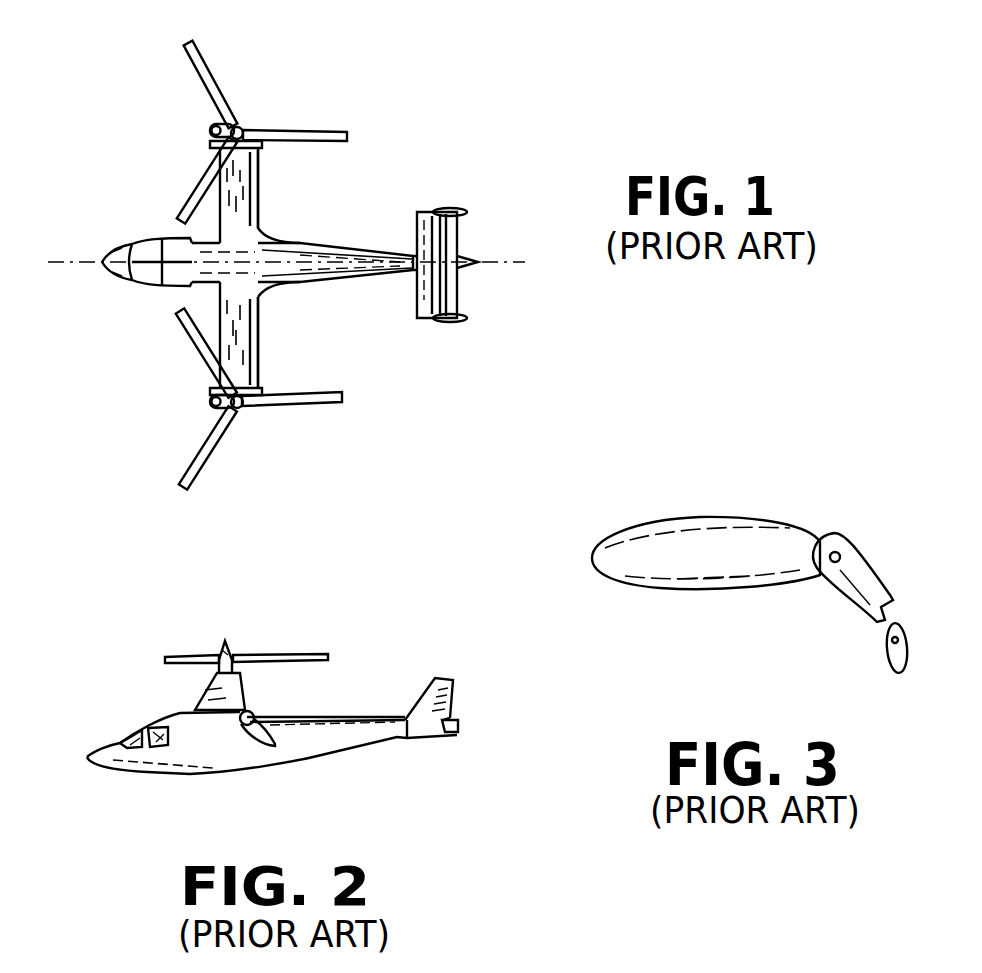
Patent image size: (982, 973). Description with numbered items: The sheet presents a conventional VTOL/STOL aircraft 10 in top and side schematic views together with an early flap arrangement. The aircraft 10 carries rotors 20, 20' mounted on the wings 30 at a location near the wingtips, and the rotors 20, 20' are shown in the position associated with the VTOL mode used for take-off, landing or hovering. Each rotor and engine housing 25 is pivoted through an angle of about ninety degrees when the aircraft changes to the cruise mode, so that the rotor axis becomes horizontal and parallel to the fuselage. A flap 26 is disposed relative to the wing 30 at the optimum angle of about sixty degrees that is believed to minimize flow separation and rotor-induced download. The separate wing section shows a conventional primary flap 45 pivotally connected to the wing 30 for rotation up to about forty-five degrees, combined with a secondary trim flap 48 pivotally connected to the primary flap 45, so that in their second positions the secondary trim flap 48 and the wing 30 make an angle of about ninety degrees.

In FIG. 1, the VTOL/STOL aircraft 10 is at (126, 345).
In FIG. 1, the rotor 20 is at (238, 398).
In FIG. 2, the rotor 20 is at (261, 629).
In FIG. 1, the rotor 20' is at (262, 132).
In FIG. 2, the rotor and engine housing 25 is at (213, 698).
In FIG. 1, the flap 26 is at (258, 173).
In FIG. 2, the flap 26 is at (262, 723).
In FIG. 1, the wing 30 is at (248, 198).
In FIG. 2, the wing 30 is at (220, 717).
In FIG. 3, the wing 30 is at (713, 518).
In FIG. 3, the primary flap 45 is at (863, 560).
In FIG. 3, the secondary trim flap 48 is at (883, 650).